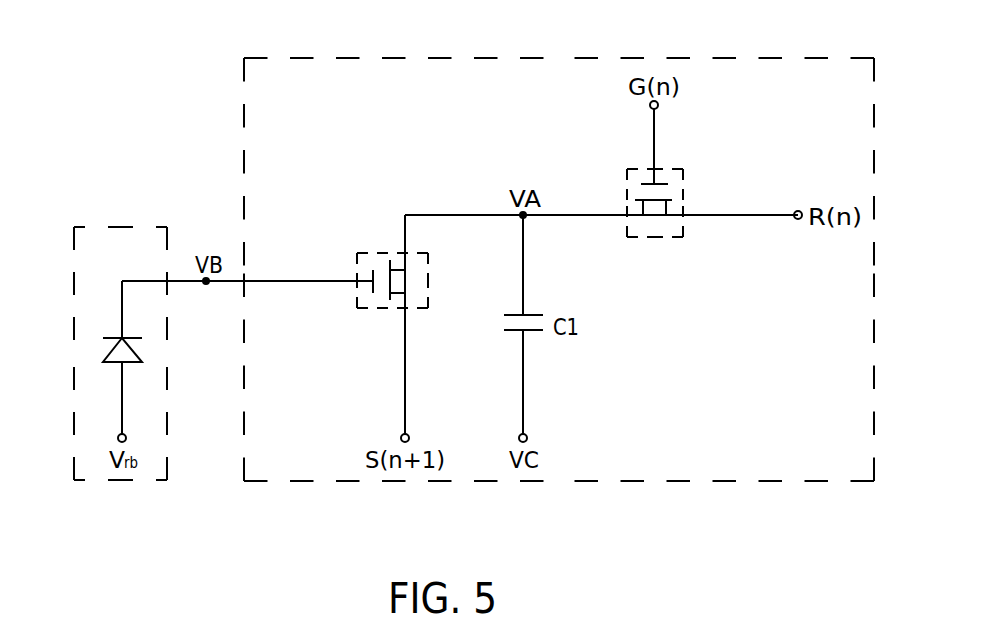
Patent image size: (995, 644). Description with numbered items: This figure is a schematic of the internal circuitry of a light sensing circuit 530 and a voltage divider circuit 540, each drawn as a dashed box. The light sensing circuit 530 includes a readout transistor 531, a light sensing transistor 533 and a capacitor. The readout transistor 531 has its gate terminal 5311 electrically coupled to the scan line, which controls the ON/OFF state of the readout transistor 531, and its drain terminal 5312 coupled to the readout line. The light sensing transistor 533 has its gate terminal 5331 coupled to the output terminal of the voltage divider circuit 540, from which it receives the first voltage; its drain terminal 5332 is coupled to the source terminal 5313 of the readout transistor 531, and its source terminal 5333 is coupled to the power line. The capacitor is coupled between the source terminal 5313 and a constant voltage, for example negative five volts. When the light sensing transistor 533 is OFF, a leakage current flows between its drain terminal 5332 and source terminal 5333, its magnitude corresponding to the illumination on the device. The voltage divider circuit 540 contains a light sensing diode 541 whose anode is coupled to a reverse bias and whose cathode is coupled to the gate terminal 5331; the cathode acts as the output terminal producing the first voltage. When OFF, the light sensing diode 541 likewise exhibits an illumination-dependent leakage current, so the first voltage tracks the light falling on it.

The light sensing circuit 530 is at (673, 483).
The readout transistor 531 is at (663, 193).
The gate terminal 5311 is at (658, 173).
The drain terminal 5312 is at (675, 223).
The source terminal 5313 is at (633, 222).
The light sensing transistor 533 is at (392, 266).
The gate terminal 5331 is at (362, 275).
The drain terminal 5332 is at (406, 258).
The source terminal 5333 is at (406, 298).
The voltage divider circuit 540 is at (119, 484).
The light sensing diode 541 is at (108, 345).